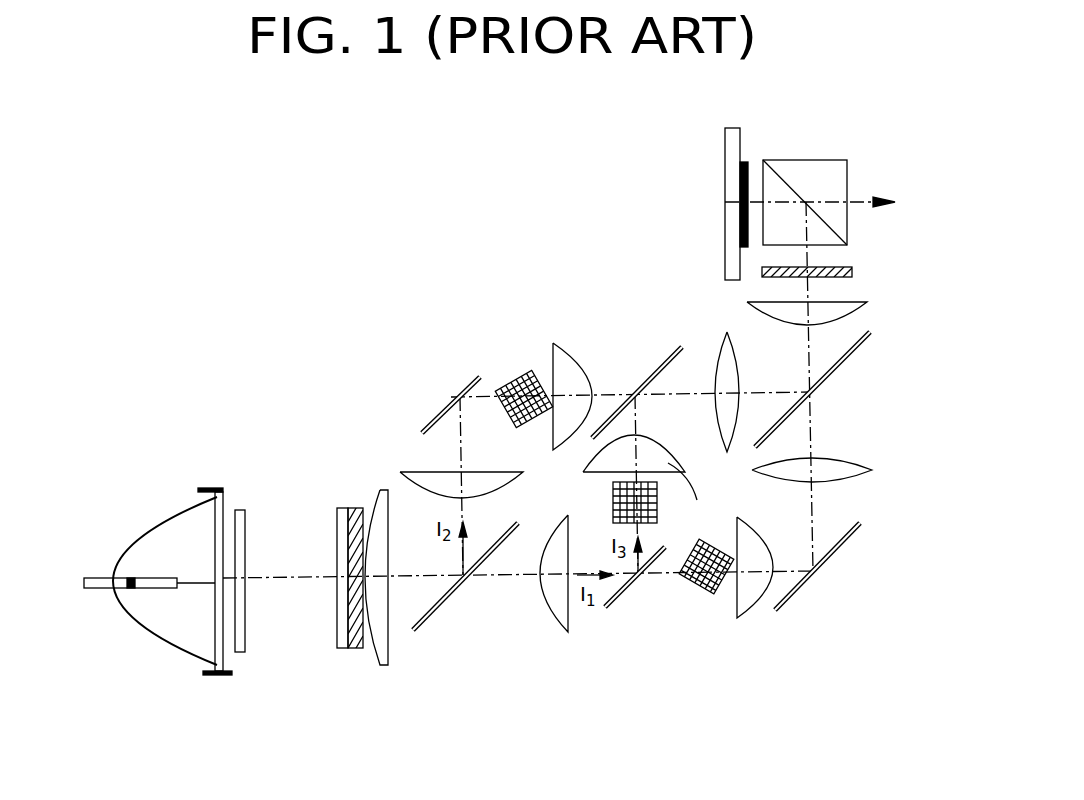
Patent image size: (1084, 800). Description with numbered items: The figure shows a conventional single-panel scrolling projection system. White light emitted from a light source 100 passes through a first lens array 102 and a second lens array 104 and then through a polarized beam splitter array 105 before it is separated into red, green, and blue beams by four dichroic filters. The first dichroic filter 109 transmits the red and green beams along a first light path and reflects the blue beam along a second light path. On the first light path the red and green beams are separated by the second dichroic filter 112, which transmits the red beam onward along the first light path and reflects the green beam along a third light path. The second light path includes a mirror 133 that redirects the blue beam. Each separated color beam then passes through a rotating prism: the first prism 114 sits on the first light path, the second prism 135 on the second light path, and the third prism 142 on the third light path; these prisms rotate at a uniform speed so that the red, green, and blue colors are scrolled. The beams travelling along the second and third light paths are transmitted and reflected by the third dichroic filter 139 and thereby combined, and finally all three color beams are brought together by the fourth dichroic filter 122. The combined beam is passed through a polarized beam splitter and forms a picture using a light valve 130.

The light source 100 is at (167, 535).
The first lens array 102 is at (240, 537).
The second lens array 104 is at (347, 643).
The polarized beam splitter array 105 is at (358, 643).
The first dichroic filter 109 is at (445, 603).
The second dichroic filter 112 is at (628, 592).
The first prism 114 is at (708, 593).
The fourth dichroic filter 122 is at (830, 372).
The light valve 130 is at (725, 202).
The mirror 133 is at (448, 403).
The second prism 135 is at (523, 372).
The third dichroic filter 139 is at (653, 377).
The third prism 142 is at (612, 498).